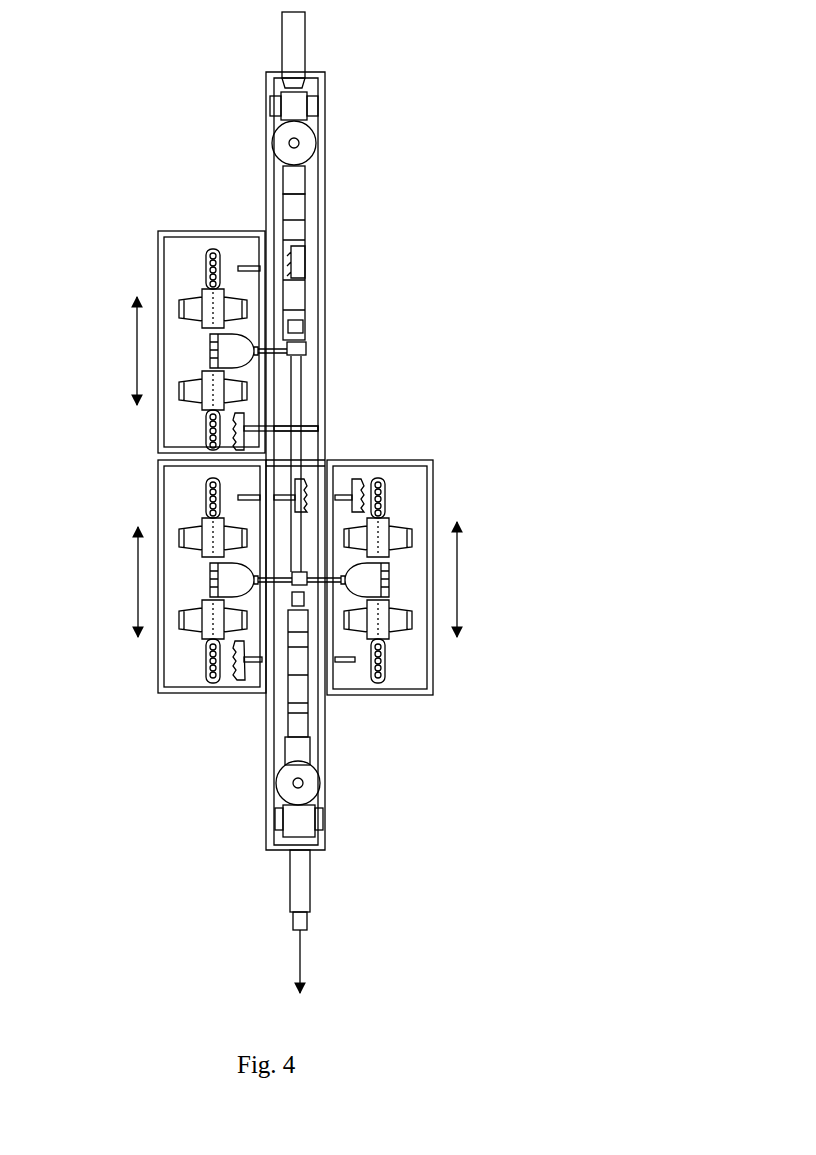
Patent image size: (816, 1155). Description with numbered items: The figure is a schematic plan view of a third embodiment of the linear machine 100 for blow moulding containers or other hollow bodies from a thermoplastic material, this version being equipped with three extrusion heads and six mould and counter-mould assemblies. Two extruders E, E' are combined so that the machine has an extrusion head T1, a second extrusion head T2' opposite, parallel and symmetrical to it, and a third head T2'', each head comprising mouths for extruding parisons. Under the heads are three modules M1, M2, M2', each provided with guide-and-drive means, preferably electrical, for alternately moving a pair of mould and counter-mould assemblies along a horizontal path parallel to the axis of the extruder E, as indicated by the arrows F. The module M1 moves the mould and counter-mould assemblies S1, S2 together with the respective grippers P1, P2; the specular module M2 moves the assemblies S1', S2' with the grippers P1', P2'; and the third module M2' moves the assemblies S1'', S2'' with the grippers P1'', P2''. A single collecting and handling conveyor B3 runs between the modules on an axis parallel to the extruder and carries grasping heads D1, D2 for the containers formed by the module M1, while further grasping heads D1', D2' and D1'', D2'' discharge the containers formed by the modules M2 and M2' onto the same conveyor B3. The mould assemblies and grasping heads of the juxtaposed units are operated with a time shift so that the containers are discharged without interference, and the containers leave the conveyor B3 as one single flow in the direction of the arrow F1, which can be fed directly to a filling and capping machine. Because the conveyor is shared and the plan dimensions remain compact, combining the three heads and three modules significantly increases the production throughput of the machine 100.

The linear machine 100 is at (463, 322).
The extruder E' is at (340, 156).
The extruder E is at (339, 787).
The grasping head D2'' is at (256, 250).
The grasping head D2' is at (329, 443).
The grasping head D2 is at (363, 463).
The grasping head D1'' is at (316, 390).
The grasping head D1' is at (223, 697).
The grasping head D1 is at (347, 674).
The module M2' is at (195, 306).
The module M2 is at (193, 617).
The module M1 is at (416, 461).
The gripper P2'' is at (133, 224).
The gripper P2' is at (196, 498).
The gripper P2 is at (404, 436).
The gripper P1'' is at (169, 440).
The gripper P1' is at (157, 686).
The gripper P1 is at (423, 696).
The mould and counter-mould assembly S2'' is at (166, 286).
The mould and counter-mould assembly S2' is at (172, 522).
The mould and counter-mould assembly S2 is at (415, 508).
The mould and counter-mould assembly S1'' is at (167, 407).
The mould and counter-mould assembly S1' is at (174, 643).
The mould and counter-mould assembly S1 is at (414, 649).
The extrusion head T2'' is at (232, 351).
The extrusion head T2' is at (233, 580).
The extrusion head T1 is at (368, 580).
The conveyor B3 is at (313, 915).
The arrow F is at (137, 351).
The arrow F1 is at (300, 957).